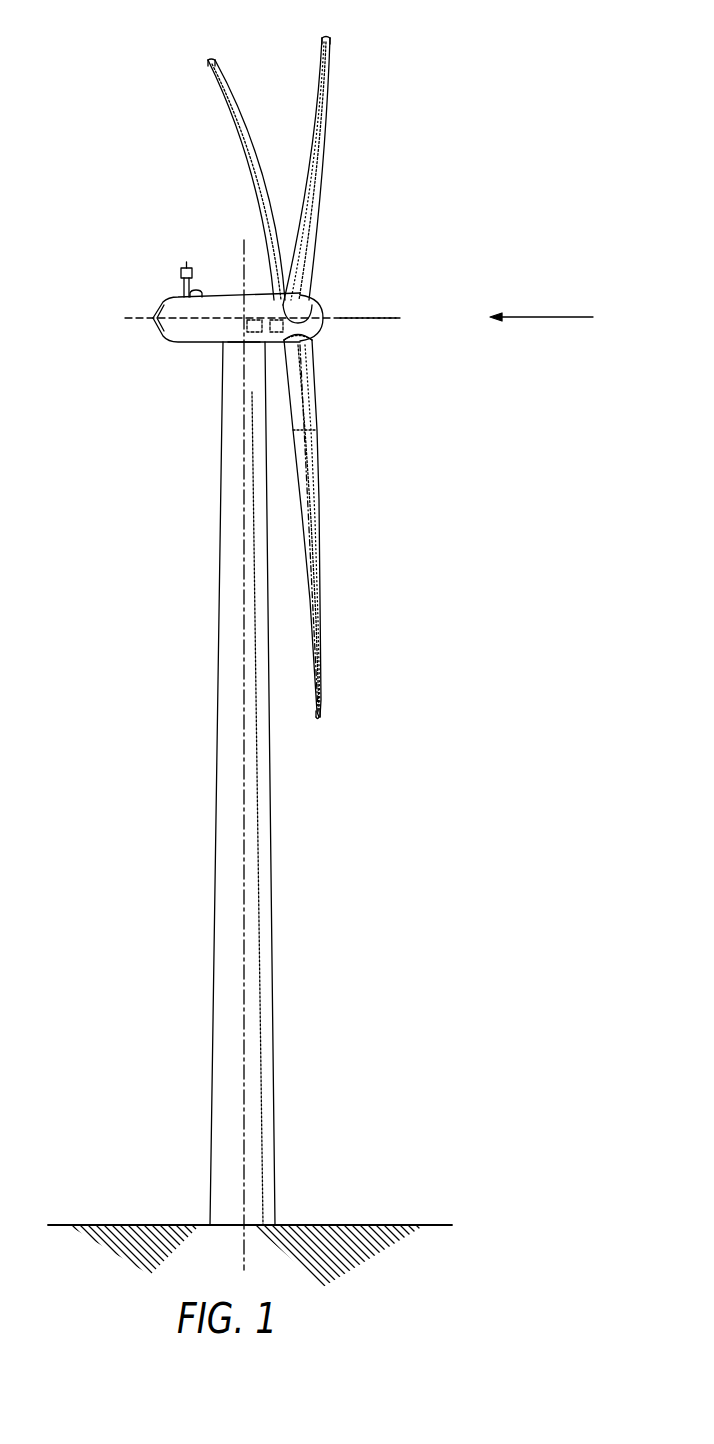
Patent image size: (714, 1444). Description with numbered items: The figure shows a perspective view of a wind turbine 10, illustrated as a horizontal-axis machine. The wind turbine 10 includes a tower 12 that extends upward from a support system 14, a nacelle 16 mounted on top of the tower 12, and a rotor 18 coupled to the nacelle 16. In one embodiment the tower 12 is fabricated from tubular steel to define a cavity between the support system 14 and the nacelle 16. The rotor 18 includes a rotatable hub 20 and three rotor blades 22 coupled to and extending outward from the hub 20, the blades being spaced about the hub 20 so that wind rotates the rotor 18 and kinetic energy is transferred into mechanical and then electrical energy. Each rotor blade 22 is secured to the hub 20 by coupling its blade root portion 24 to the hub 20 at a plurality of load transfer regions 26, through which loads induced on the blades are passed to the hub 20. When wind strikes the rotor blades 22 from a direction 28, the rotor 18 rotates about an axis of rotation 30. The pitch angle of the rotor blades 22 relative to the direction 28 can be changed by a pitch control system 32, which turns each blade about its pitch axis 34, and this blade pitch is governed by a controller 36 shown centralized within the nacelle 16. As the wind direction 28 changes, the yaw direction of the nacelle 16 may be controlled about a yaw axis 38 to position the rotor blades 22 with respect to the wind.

The wind turbine 10 is at (359, 642).
The tower 12 is at (214, 917).
The support system 14 is at (130, 1225).
The nacelle 16 is at (200, 346).
The rotor 18 is at (279, 367).
The rotatable hub 20 is at (312, 301).
The rotor blade 22 is at (307, 160).
The blade root portion 24 is at (318, 452).
The load transfer regions 26 is at (302, 336).
The direction 28 is at (533, 317).
The axis of rotation 30 is at (378, 322).
The pitch control system 32 is at (313, 390).
The pitch axes 34 is at (208, 62).
The controller 36 is at (245, 348).
The yaw axis 38 is at (245, 917).